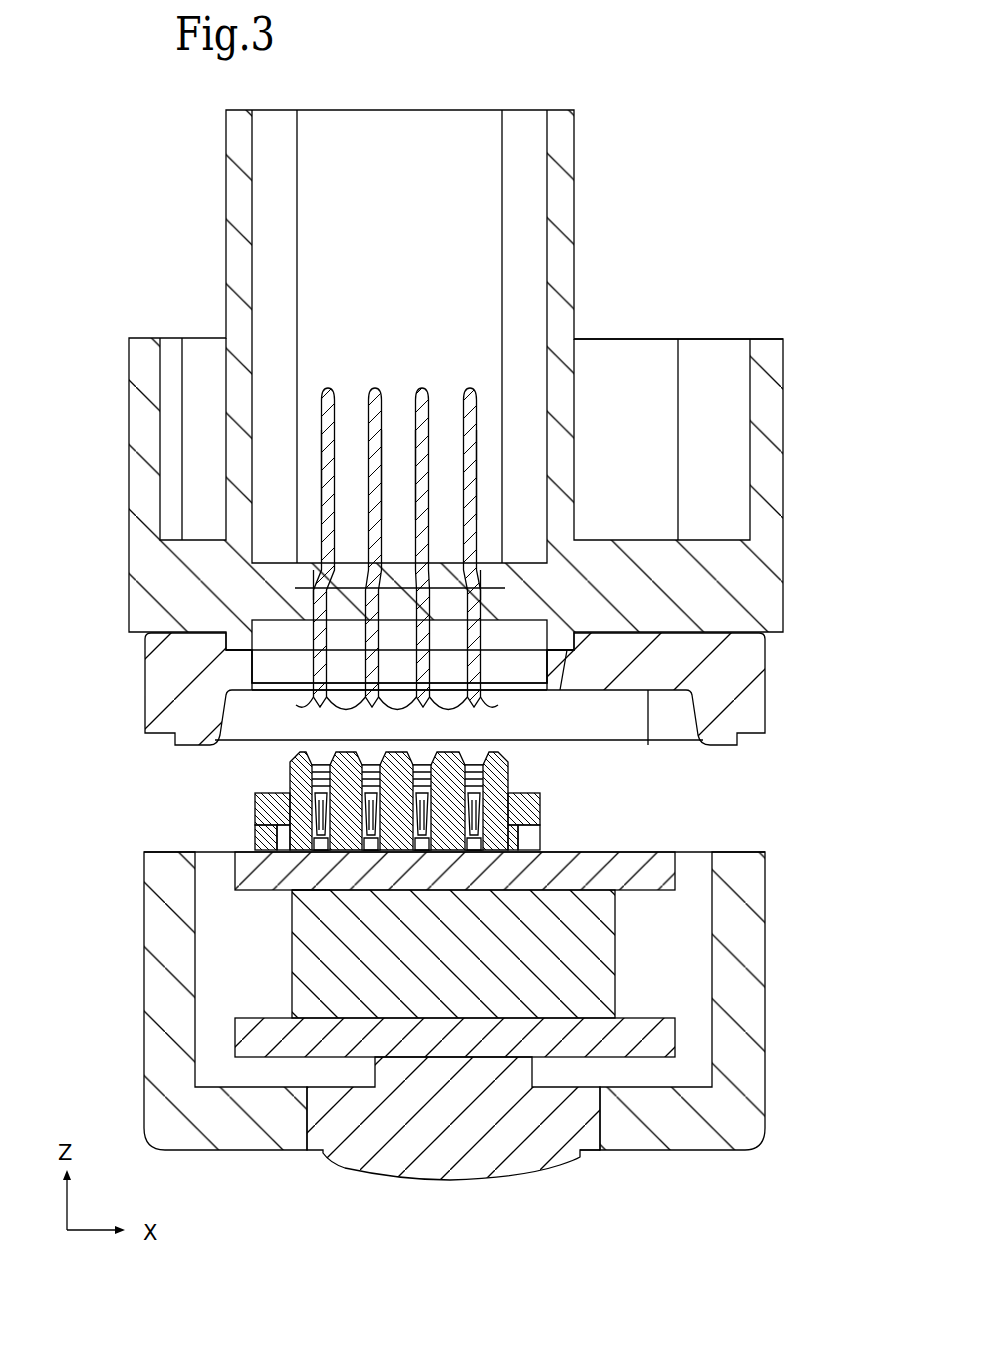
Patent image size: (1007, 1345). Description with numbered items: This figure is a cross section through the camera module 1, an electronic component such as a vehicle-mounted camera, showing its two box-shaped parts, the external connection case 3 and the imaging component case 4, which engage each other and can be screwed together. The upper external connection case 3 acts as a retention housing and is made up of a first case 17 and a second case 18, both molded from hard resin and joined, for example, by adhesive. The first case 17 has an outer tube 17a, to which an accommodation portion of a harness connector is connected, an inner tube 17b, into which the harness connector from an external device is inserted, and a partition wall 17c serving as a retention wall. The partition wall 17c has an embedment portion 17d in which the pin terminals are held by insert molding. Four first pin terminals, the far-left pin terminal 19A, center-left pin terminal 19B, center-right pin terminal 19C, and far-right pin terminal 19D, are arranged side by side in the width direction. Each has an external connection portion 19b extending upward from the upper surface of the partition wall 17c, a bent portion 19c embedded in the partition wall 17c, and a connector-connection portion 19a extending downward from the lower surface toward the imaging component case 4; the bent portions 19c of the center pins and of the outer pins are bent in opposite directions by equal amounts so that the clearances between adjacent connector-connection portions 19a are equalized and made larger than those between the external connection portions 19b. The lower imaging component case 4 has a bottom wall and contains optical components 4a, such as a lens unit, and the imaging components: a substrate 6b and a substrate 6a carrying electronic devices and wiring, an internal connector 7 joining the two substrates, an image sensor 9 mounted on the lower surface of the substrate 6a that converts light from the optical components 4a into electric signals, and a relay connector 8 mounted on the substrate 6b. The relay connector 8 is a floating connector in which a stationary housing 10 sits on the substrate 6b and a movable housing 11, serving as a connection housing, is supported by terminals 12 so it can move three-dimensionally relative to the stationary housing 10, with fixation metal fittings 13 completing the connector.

The camera module 1 is at (164, 138).
The external connection case 3 is at (766, 338).
The imaging component case 4 is at (765, 985).
The optical components 4a is at (530, 1178).
The substrate 6a is at (235, 1043).
The substrate 6b is at (235, 871).
The internal connector 7 is at (292, 946).
The relay connector 8 is at (540, 800).
The image sensor 9 is at (425, 1088).
The stationary housing 10 is at (255, 840).
The movable housing 11 is at (290, 775).
The terminals 12 is at (294, 891).
The fixation metal fittings 13 is at (272, 800).
The first case 17 is at (129, 541).
The outer tube 17a is at (783, 415).
The inner tube 17b is at (578, 150).
The partition wall 17c is at (712, 540).
The embedment portion 17d is at (399, 655).
The second case 18 is at (145, 688).
The far-left pin terminal 19A is at (322, 390).
The center-left pin terminal 19B is at (370, 390).
The center-right pin terminal 19C is at (423, 390).
The far-right pin terminal 19D is at (472, 390).
The connector-connection portion 19a is at (397, 721).
The external connection portion 19b is at (368, 477).
The bent portion 19c is at (380, 595).